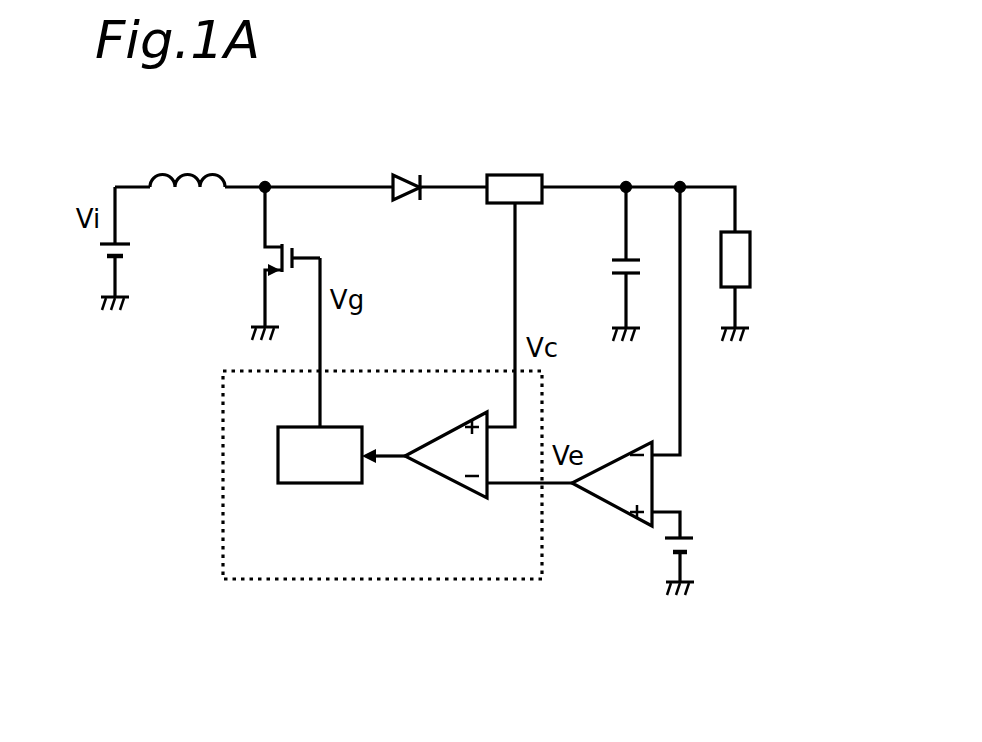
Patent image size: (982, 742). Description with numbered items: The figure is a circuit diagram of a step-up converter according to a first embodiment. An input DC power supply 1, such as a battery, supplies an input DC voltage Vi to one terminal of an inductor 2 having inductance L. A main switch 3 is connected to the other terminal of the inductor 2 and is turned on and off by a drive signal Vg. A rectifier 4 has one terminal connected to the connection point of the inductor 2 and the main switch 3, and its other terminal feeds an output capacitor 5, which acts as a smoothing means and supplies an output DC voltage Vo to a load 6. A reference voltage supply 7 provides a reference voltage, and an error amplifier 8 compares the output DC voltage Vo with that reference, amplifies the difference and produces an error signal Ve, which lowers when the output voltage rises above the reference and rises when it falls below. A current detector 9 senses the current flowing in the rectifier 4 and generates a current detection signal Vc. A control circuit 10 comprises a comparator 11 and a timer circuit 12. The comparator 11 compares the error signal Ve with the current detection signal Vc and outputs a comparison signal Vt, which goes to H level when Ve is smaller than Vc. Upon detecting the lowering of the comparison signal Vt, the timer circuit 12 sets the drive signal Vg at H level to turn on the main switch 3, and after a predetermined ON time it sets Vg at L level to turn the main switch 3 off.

The input DC power supply 1 is at (118, 261).
The inductor 2 is at (204, 173).
The main switch 3 is at (255, 261).
The rectifier 4 is at (418, 172).
The output capacitor 5 is at (606, 268).
The load 6 is at (742, 290).
The reference voltage supply 7 is at (700, 545).
The error amplifier 8 is at (634, 518).
The current detector 9 is at (535, 172).
The control circuit 10 is at (220, 533).
The comparator 11 is at (458, 485).
The timer circuit 12 is at (315, 488).